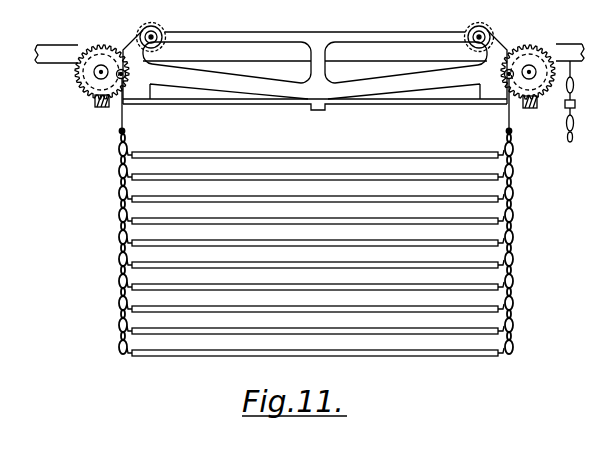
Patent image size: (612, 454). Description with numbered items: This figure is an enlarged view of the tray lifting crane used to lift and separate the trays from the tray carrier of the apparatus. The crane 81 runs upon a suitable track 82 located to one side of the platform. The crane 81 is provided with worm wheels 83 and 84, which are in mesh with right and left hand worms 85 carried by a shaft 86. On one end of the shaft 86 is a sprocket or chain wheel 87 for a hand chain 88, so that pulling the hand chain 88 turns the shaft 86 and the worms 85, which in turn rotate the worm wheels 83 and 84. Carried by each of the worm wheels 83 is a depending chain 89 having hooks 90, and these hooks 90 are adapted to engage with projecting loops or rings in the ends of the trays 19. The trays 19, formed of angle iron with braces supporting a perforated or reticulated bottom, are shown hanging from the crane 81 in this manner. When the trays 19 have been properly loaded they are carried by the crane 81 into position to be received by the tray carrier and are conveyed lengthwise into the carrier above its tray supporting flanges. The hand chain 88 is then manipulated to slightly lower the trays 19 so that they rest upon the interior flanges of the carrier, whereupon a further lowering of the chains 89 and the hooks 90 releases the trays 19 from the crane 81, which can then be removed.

The tray 19 is at (328, 174).
The crane 81 is at (340, 32).
The track 82 is at (566, 43).
The worm wheel 83 is at (548, 63).
The worm wheel 84 is at (78, 86).
The worm 85 is at (103, 108).
The shaft 86 is at (208, 104).
The sprocket or chain wheel 87 is at (575, 106).
The hand chain 88 is at (574, 150).
The depending chain 89 is at (118, 184).
The hook 90 is at (118, 172).